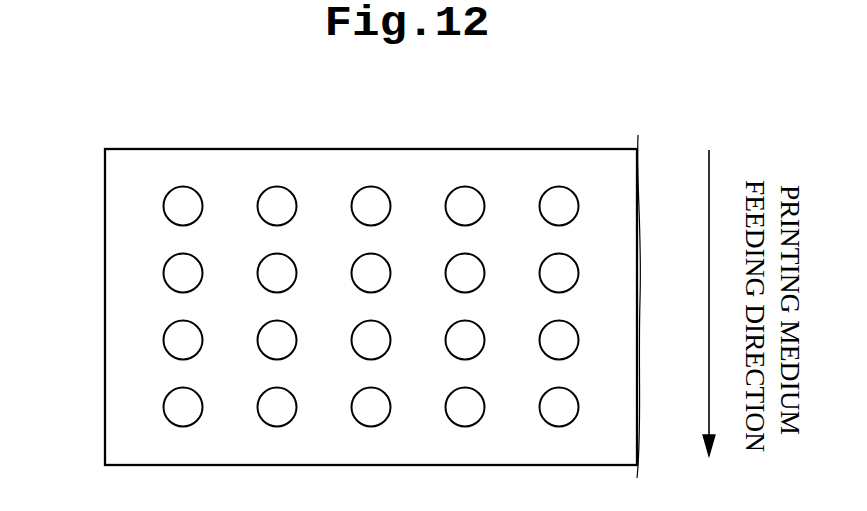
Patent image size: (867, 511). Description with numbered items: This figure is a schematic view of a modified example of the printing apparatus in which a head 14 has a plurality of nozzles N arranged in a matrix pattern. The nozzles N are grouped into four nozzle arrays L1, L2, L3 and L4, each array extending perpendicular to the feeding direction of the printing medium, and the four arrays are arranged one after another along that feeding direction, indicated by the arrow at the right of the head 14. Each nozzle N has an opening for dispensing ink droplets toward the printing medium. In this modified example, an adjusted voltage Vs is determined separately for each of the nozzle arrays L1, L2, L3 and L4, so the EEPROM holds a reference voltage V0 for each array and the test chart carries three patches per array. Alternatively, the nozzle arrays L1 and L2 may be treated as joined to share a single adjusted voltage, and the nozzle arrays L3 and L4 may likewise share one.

The head 14 is at (50, 133).
The nozzle N is at (183, 187).
The nozzle array L1 is at (105, 175).
The nozzle array L2 is at (105, 242).
The nozzle array L3 is at (105, 309).
The nozzle array L4 is at (105, 376).